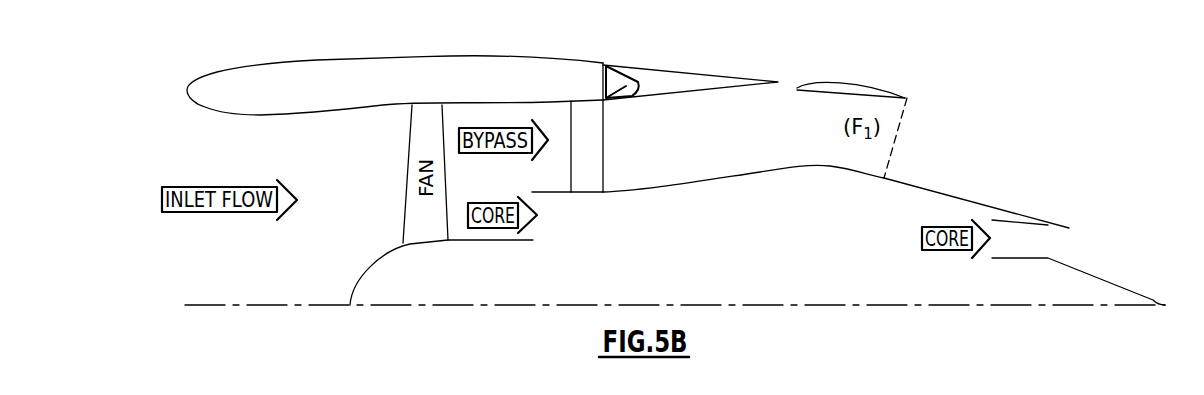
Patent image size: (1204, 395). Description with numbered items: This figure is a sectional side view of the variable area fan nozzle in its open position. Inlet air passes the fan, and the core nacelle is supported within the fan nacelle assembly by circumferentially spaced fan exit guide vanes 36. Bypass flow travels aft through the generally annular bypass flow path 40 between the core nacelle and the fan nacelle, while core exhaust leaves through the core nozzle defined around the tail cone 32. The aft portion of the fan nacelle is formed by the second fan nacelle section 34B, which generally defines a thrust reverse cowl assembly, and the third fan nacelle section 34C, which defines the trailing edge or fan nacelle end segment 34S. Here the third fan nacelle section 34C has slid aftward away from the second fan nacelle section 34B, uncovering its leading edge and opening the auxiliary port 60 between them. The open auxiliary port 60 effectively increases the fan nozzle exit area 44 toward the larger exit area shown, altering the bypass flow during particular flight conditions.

The tail cone 32 is at (1112, 278).
The second fan nacelle section 34B is at (728, 60).
The third fan nacelle section 34C is at (868, 75).
The fan nacelle end segment 34S is at (907, 98).
The fan exit guide vanes 36 is at (605, 148).
The bypass flow path 40 is at (707, 166).
The fan nozzle exit area 44 is at (897, 152).
The auxiliary port 60 is at (783, 87).